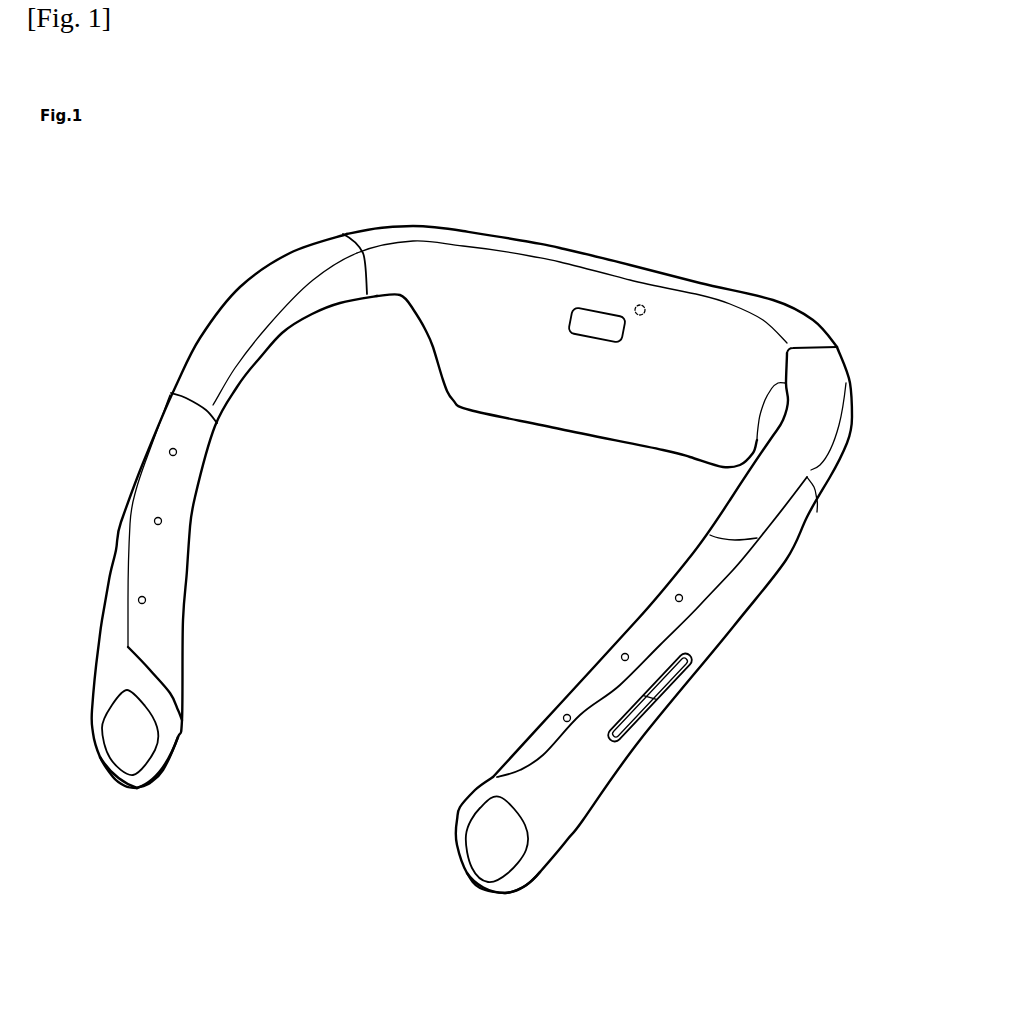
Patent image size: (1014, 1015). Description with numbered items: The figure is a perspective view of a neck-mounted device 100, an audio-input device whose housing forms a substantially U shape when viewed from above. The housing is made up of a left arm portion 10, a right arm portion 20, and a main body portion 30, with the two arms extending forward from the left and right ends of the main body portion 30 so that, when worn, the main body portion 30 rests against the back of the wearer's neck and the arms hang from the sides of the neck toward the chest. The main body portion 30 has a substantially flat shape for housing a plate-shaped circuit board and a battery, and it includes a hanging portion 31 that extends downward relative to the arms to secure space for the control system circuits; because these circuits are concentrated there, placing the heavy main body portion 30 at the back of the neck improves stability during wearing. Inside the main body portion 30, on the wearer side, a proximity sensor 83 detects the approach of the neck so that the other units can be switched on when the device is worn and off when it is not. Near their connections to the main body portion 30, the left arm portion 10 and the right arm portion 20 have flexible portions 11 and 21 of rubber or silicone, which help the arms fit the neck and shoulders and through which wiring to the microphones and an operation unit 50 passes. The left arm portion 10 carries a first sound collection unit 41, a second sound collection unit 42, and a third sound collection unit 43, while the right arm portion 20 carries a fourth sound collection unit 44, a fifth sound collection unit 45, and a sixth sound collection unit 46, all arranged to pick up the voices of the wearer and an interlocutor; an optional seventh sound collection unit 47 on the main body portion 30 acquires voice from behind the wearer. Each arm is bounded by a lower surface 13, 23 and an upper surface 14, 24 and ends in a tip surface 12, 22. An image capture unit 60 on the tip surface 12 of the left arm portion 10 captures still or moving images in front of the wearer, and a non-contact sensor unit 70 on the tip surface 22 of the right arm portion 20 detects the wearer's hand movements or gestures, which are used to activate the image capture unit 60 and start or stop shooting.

The neck-mounted device 100 is at (477, 555).
The left arm portion 10 is at (650, 652).
The flexible portion 11 is at (826, 470).
The tip surface 12 is at (487, 869).
The lower surface 13 is at (481, 906).
The upper surface 14 is at (534, 754).
The right arm portion 20 is at (209, 551).
The flexible portion 21 is at (240, 305).
The tip surface 22 is at (147, 746).
The lower surface 23 is at (141, 801).
The upper surface 24 is at (142, 654).
The main body portion 30 is at (592, 310).
The hanging portion 31 is at (440, 360).
The first sound collection unit 41 is at (564, 717).
The second sound collection unit 42 is at (622, 656).
The third sound collection unit 43 is at (676, 597).
The fourth sound collection unit 44 is at (146, 600).
The fifth sound collection unit 45 is at (162, 521).
The sixth sound collection unit 46 is at (176, 452).
The seventh sound collection unit 47 is at (644, 305).
The operation unit 50 is at (638, 706).
The image capture unit 60 is at (502, 853).
The sensor unit 70 is at (130, 740).
The proximity sensor 83 is at (597, 328).